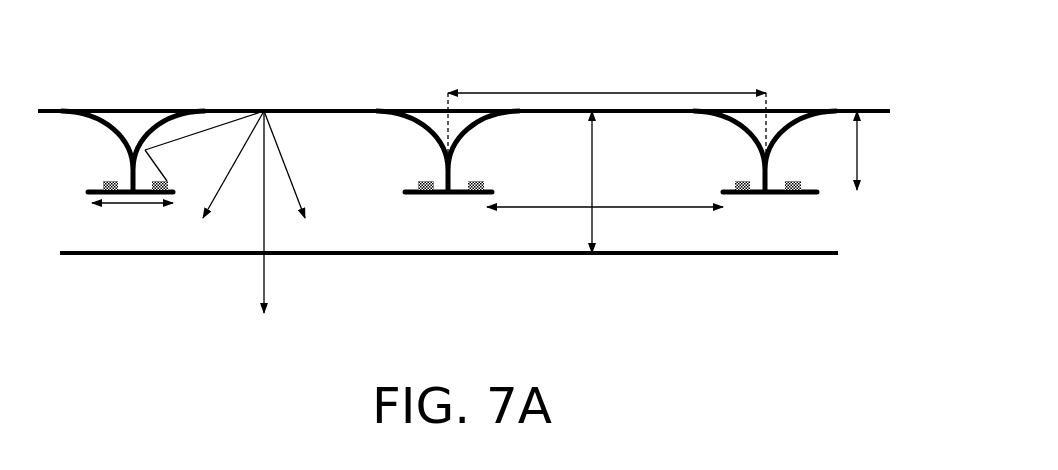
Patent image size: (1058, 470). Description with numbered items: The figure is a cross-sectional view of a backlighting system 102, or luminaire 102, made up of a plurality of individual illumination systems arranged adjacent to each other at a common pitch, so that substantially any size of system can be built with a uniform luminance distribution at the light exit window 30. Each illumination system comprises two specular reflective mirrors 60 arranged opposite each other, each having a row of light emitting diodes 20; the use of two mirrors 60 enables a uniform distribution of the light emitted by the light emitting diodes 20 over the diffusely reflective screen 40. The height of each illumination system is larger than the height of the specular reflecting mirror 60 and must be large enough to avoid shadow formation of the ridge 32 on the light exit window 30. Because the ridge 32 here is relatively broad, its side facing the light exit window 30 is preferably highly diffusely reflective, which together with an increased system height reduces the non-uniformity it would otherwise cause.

The backlighting system 102 is at (793, 33).
The specular reflective mirror 60 is at (411, 128).
The light emitting diodes 20 is at (418, 187).
The ridge 32 is at (762, 195).
The light exit window 30 is at (513, 255).
The diffusely reflective screen 40 is at (294, 114).